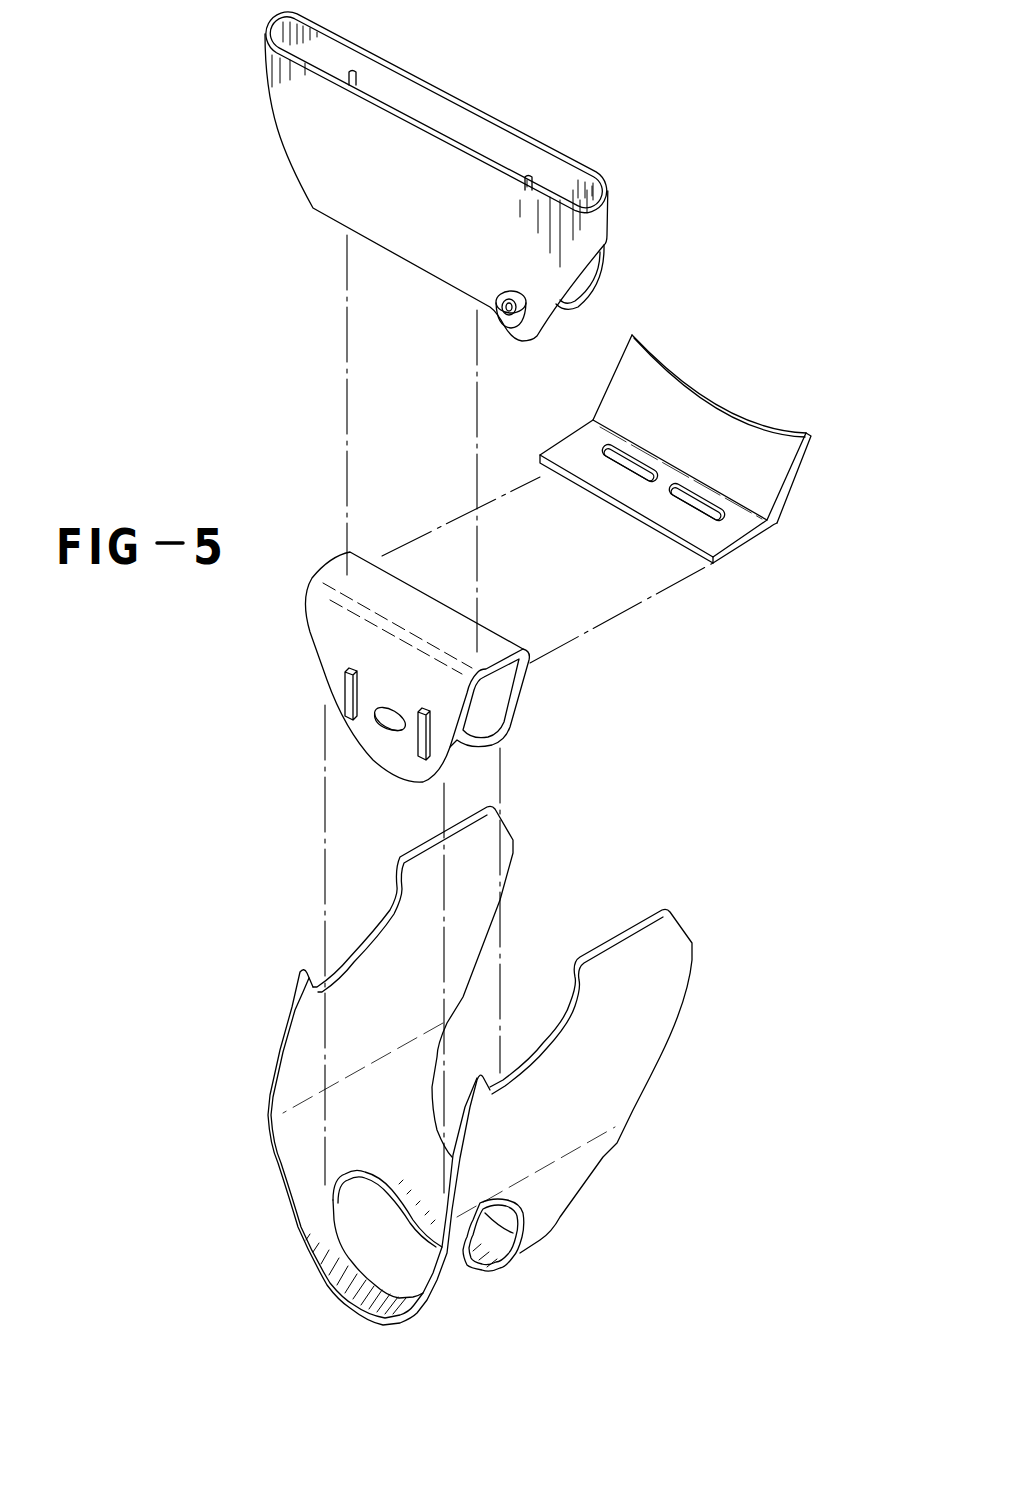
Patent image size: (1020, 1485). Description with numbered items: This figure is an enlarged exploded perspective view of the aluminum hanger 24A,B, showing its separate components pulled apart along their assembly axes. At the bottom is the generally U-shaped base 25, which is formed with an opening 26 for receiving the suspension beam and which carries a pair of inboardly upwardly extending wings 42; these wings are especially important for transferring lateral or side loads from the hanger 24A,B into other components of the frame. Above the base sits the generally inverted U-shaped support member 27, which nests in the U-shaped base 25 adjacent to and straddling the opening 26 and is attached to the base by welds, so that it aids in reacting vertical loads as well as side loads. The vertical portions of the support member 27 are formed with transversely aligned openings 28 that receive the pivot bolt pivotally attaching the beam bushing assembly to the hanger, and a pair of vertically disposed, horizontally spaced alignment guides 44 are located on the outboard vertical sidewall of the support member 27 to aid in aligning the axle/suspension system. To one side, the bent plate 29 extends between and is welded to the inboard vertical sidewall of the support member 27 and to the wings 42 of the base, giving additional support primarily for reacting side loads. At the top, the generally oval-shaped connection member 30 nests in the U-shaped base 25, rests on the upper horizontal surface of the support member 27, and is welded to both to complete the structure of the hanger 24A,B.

The connection member 30 is at (590, 222).
The bent plate 29 is at (722, 427).
The support member 27 is at (517, 693).
The alignment guides 44 is at (420, 712).
The openings 28 is at (385, 720).
The U-shaped base 25 is at (650, 1077).
The wings 42 is at (487, 838).
The opening 26 is at (481, 1272).
The hanger 24A,B is at (532, 1059).